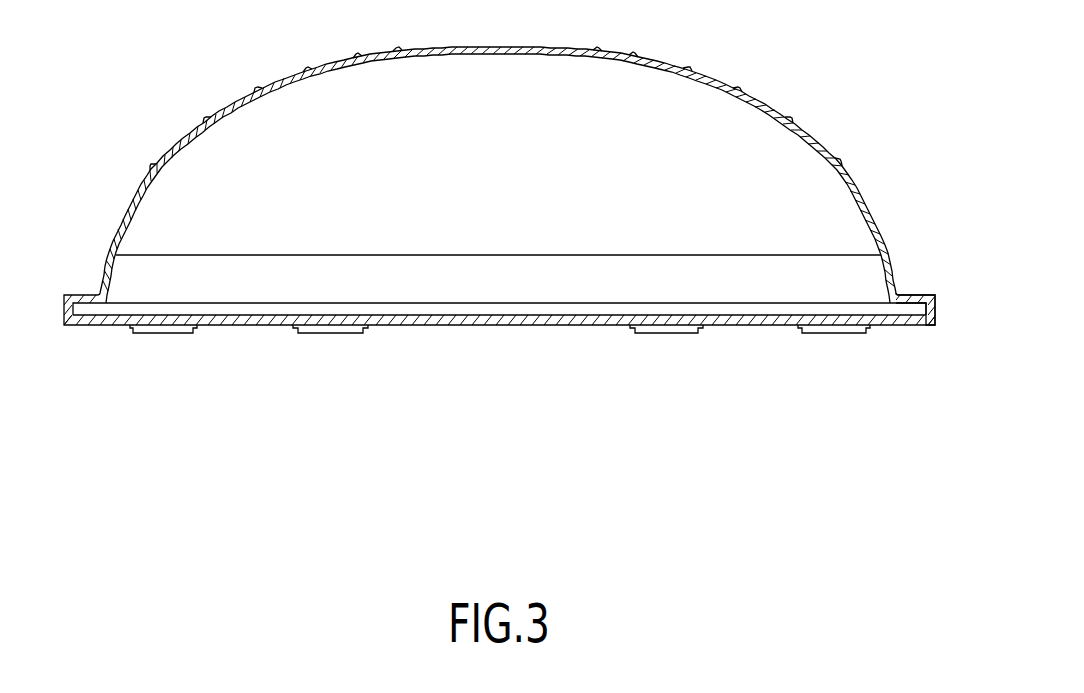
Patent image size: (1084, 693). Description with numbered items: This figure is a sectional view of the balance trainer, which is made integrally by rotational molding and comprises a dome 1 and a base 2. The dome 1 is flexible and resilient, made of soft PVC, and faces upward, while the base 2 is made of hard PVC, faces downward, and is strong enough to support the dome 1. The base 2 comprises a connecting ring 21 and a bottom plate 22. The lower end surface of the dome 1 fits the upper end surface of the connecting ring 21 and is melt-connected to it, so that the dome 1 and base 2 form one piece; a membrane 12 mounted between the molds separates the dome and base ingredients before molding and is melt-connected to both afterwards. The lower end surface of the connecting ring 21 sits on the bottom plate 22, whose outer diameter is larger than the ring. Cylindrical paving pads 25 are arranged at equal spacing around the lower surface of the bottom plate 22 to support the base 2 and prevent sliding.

The dome 1 is at (772, 103).
The membrane 12 is at (585, 255).
The base 2 is at (514, 326).
The connecting ring 21 is at (890, 278).
The bottom plate 22 is at (490, 318).
The paving pad 25 is at (668, 327).